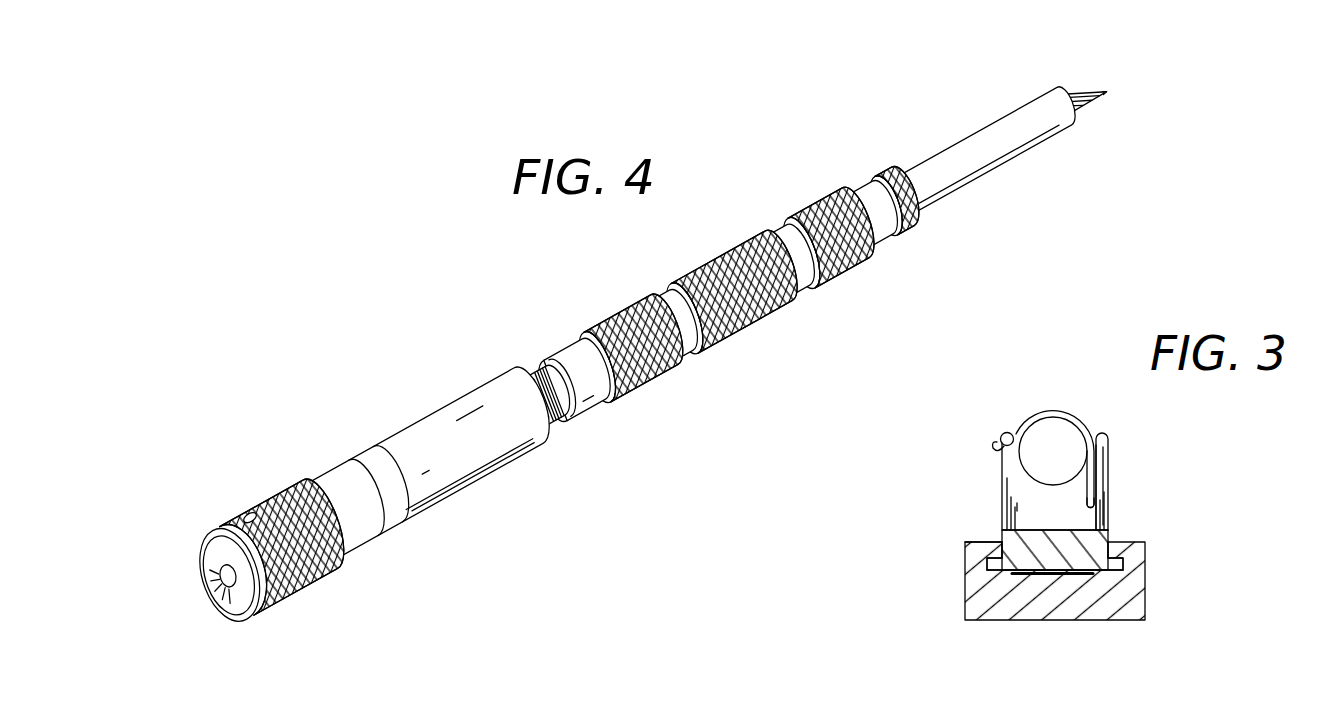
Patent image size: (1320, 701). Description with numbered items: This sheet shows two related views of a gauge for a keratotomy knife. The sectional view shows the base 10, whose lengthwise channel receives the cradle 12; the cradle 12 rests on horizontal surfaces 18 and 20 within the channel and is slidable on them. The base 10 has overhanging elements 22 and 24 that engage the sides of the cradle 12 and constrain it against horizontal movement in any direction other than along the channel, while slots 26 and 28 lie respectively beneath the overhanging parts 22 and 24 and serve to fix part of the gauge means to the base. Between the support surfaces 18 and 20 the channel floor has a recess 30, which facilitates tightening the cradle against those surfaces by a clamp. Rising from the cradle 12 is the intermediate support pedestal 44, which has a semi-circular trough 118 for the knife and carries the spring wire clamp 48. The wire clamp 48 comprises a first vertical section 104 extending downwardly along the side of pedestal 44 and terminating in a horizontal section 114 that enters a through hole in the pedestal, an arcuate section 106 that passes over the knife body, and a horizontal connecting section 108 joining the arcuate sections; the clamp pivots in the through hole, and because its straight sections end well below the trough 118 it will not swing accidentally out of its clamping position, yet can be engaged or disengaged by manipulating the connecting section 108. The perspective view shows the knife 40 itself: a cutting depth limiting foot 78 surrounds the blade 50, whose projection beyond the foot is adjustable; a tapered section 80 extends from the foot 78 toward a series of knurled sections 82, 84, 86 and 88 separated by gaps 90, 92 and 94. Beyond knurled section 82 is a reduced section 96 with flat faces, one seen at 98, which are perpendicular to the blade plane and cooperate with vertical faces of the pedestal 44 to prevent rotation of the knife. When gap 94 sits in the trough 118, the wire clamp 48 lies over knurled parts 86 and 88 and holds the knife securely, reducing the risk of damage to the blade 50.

In FIG. 3, the base 10 is at (1148, 598).
In FIG. 3, the cradle 12 is at (1112, 532).
In FIG. 3, the horizontal surface 18 is at (988, 578).
In FIG. 3, the horizontal surface 20 is at (1117, 569).
In FIG. 3, the overhanging element 22 is at (1000, 543).
In FIG. 3, the overhanging element 24 is at (1117, 549).
In FIG. 3, the slot 26 is at (988, 564).
In FIG. 3, the slot 28 is at (1127, 563).
In FIG. 3, the recess 30 is at (1046, 574).
In FIG. 3, the support pedestal 44 is at (1000, 477).
In FIG. 3, the wire clamp 48 is at (1098, 485).
In FIG. 3, the first vertical section 104 is at (1088, 452).
In FIG. 3, the arcuate section 106 is at (1072, 421).
In FIG. 3, the horizontal connecting section 108 is at (993, 446).
In FIG. 3, the horizontal section 114 is at (1090, 507).
In FIG. 3, the semi-circular trough 118 is at (1060, 485).
In FIG. 4, the knife 40 is at (646, 387).
In FIG. 4, the blade 50 is at (1110, 89).
In FIG. 4, the cutting depth limiting foot 78 is at (1090, 106).
In FIG. 4, the tapered section 80 is at (1004, 157).
In FIG. 4, the knurled section 82 is at (670, 366).
In FIG. 4, the knurled section 84 is at (749, 319).
In FIG. 4, the knurled section 86 is at (837, 270).
In FIG. 4, the knurled section 88 is at (903, 228).
In FIG. 4, the gap 90 is at (671, 303).
In FIG. 4, the gap 92 is at (759, 253).
In FIG. 4, the gap 94 is at (849, 193).
In FIG. 4, the reduced section 96 is at (533, 372).
In FIG. 4, the flat face 98 is at (556, 420).